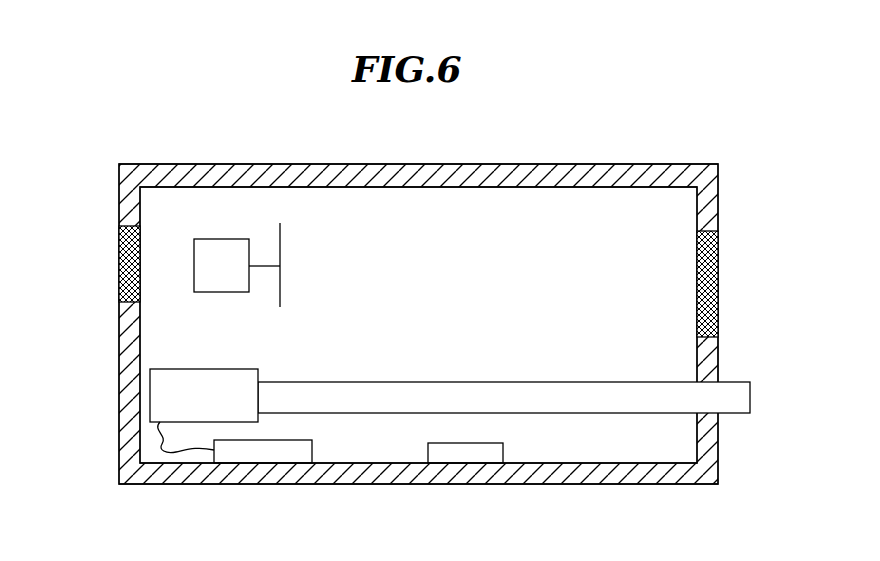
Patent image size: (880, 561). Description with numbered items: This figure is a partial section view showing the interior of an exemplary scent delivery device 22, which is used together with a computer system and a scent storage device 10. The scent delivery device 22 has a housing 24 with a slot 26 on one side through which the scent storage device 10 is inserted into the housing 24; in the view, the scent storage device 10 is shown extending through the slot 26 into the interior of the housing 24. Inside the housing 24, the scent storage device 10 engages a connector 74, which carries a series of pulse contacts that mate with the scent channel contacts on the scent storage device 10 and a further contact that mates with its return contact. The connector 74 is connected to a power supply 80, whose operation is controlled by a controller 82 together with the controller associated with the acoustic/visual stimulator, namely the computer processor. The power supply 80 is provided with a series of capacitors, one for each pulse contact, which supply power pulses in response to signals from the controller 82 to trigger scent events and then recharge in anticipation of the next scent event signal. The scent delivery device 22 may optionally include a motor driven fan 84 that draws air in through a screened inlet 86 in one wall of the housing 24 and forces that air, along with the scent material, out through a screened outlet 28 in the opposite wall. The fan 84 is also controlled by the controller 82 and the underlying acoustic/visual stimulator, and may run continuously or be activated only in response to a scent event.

The scent delivery device 22 is at (536, 143).
The housing 24 is at (205, 164).
The screened inlet 86 is at (121, 260).
The screened outlet 28 is at (712, 263).
The scent storage device 10 is at (443, 382).
The slot 26 is at (722, 380).
The connector 74 is at (167, 394).
The motor driven fan 84 is at (232, 303).
The power supply 80 is at (267, 452).
The controller 82 is at (468, 455).